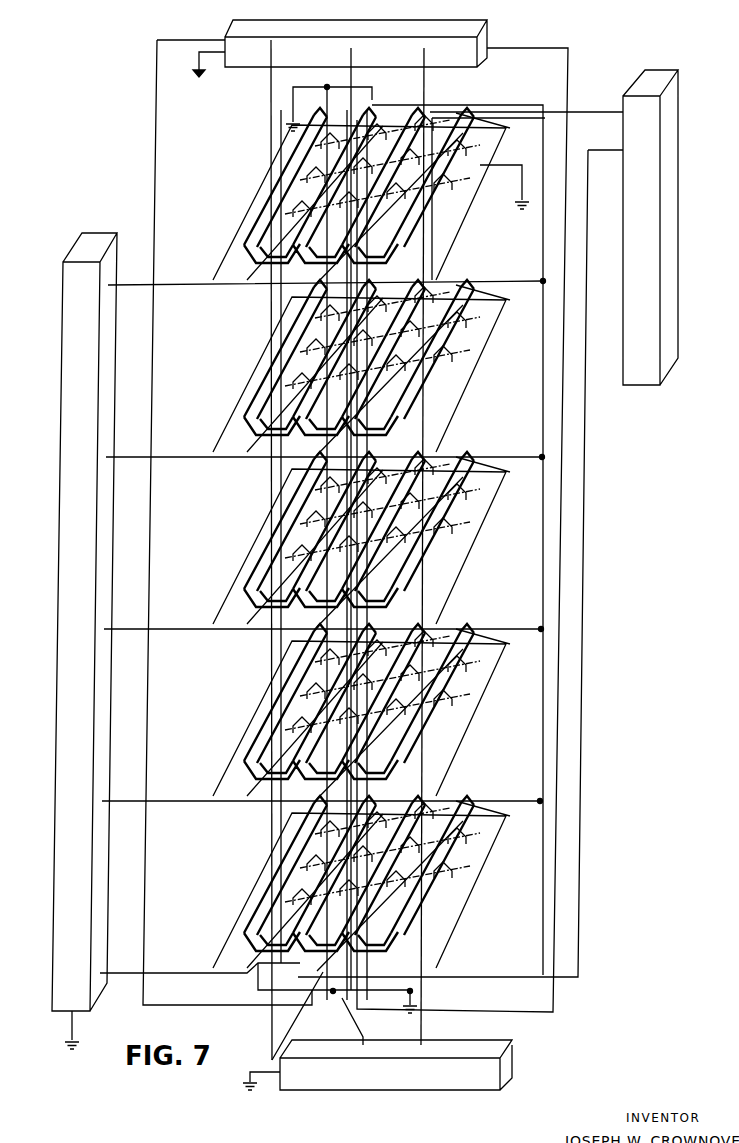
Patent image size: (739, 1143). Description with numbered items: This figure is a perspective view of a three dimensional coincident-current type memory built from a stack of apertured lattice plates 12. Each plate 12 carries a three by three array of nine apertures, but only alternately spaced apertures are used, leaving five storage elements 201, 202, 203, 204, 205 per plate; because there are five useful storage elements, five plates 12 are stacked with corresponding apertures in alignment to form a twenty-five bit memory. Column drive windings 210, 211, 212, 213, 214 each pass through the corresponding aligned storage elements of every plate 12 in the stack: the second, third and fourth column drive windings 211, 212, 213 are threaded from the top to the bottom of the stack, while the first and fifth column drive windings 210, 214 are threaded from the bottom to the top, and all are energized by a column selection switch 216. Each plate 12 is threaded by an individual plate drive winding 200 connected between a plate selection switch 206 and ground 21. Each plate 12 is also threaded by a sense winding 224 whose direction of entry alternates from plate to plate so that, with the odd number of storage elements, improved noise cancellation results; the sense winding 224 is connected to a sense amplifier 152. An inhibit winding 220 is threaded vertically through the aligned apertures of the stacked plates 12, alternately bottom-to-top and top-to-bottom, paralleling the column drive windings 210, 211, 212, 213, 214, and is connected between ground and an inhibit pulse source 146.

The apertured plate 12 is at (444, 220).
The ground connection 21 is at (324, 110).
The inhibit pulse source 146 is at (338, 1044).
The sense amplifier 152 is at (632, 86).
The plate drive winding 200 is at (497, 152).
The storage element 201 is at (326, 152).
The storage element 202 is at (422, 153).
The storage element 203 is at (320, 197).
The storage element 204 is at (270, 232).
The storage element 205 is at (400, 232).
The plate selection switch 206 is at (90, 240).
The first column drive winding 210 is at (157, 126).
The second column drive winding 211 is at (424, 80).
The third column drive winding 212 is at (351, 76).
The fourth column drive winding 213 is at (271, 110).
The fifth column drive winding 214 is at (568, 80).
The column selection switch 216 is at (488, 50).
The inhibit winding 220 is at (430, 278).
The sense winding 224 is at (614, 116).